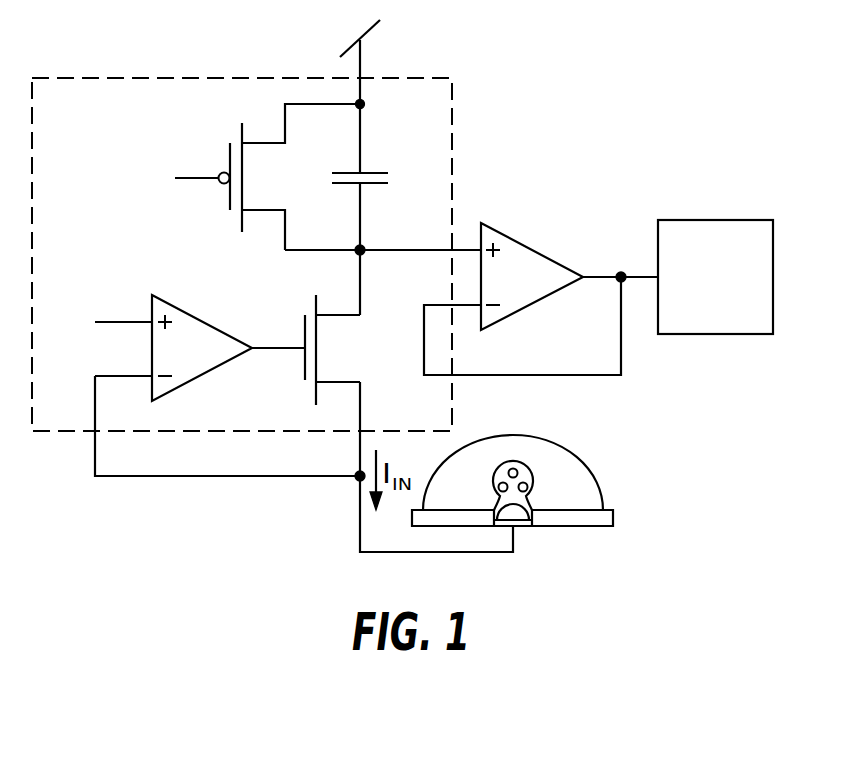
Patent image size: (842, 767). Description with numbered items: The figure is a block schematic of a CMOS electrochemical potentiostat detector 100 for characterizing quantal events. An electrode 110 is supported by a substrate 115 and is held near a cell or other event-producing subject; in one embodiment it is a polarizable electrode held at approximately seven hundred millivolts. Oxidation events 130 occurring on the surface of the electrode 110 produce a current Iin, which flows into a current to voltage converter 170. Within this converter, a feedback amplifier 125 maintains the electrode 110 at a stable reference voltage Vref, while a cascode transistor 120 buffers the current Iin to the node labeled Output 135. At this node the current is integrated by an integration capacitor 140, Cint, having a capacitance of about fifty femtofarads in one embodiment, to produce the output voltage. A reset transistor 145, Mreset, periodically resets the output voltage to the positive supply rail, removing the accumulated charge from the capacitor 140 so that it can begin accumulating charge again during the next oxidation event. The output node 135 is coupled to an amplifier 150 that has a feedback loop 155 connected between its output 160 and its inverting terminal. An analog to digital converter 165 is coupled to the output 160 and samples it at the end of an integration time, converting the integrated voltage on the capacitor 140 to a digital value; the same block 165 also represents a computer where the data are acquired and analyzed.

The potentiostat detector 100 is at (672, 34).
The electrode 110 is at (520, 527).
The substrate 115 is at (614, 518).
The cascode transistor 120 is at (303, 373).
The feedback amplifier 125 is at (203, 316).
The oxidation events 130 is at (519, 510).
The output node 135 is at (362, 253).
The integration capacitor 140 is at (375, 173).
The reset transistor 145 is at (229, 200).
The amplifier 150 is at (530, 250).
The feedback loop 155 is at (522, 375).
The output 160 is at (622, 270).
The analog to digital converter 165 is at (716, 220).
The current to voltage converter 170 is at (242, 78).